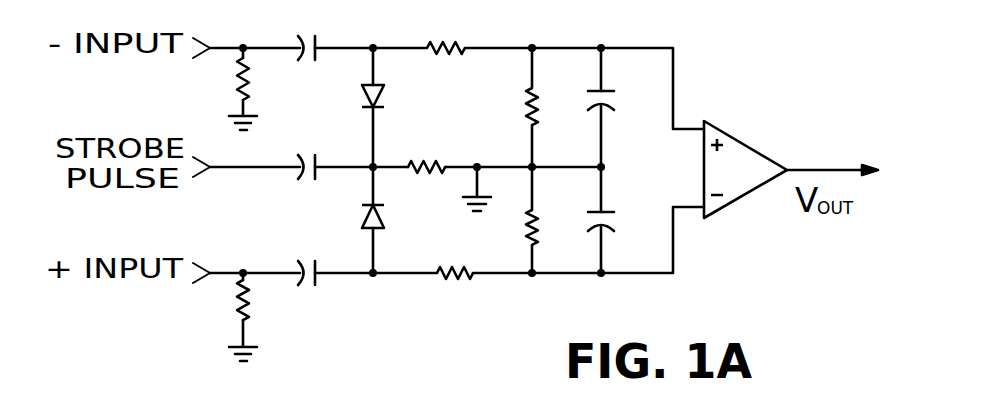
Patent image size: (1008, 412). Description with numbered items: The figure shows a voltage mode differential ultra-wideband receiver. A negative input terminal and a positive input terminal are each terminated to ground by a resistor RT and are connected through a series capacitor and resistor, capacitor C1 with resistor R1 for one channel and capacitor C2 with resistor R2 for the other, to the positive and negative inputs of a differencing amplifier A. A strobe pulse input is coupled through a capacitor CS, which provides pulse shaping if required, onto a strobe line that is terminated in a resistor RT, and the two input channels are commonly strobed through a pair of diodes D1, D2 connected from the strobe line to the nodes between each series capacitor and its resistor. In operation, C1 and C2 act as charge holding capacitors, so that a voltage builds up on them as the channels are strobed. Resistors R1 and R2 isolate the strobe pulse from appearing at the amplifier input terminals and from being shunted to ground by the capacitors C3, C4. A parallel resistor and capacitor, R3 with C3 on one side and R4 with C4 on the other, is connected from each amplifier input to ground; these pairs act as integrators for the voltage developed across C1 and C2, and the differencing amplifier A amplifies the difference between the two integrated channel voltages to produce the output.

The terminating resistor RT is at (326, 204).
The series capacitor C1 is at (323, 30).
The strobe capacitor CS is at (309, 193).
The series capacitor C2 is at (318, 298).
The series resistor R1 is at (454, 31).
The series resistor R2 is at (457, 297).
The strobe diode D1 is at (400, 98).
The strobe diode D2 is at (400, 229).
The parallel resistor R3 is at (511, 109).
The parallel resistor R4 is at (554, 232).
The parallel capacitor C3 is at (623, 110).
The parallel capacitor C4 is at (622, 229).
The differencing amplifier A is at (791, 169).